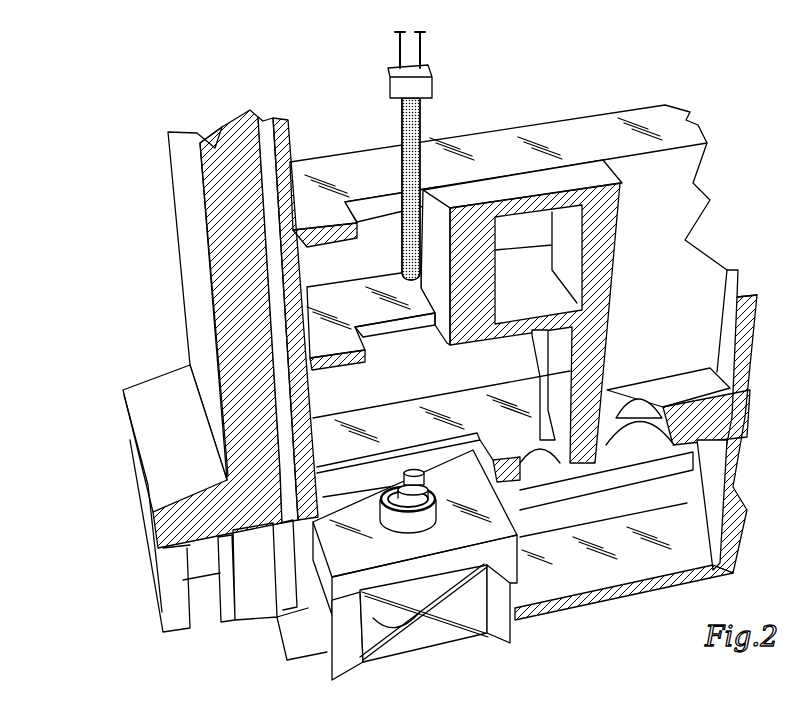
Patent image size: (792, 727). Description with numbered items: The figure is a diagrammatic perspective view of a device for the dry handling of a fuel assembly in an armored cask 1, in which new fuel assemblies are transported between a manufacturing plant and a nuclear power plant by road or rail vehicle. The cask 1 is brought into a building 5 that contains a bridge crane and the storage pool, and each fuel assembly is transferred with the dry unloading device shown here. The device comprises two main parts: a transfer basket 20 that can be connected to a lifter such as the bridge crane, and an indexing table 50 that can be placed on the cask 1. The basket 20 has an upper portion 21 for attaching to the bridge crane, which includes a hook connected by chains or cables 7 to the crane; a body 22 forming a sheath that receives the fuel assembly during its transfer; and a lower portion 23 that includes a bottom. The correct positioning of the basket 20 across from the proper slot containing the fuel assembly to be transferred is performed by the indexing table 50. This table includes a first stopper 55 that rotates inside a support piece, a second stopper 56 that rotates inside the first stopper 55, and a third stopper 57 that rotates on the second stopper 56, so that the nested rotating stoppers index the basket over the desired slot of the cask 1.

The armored cask 1 is at (390, 597).
The building 5 is at (145, 307).
The chains or cables 7 is at (422, 50).
The transfer basket 20 is at (423, 141).
The upper portion 21 is at (433, 86).
The body 22 is at (400, 134).
The lower portion 23 is at (392, 278).
The indexing table 50 is at (434, 477).
The first stopper 55 is at (442, 506).
The second stopper 56 is at (400, 492).
The third stopper 57 is at (416, 468).